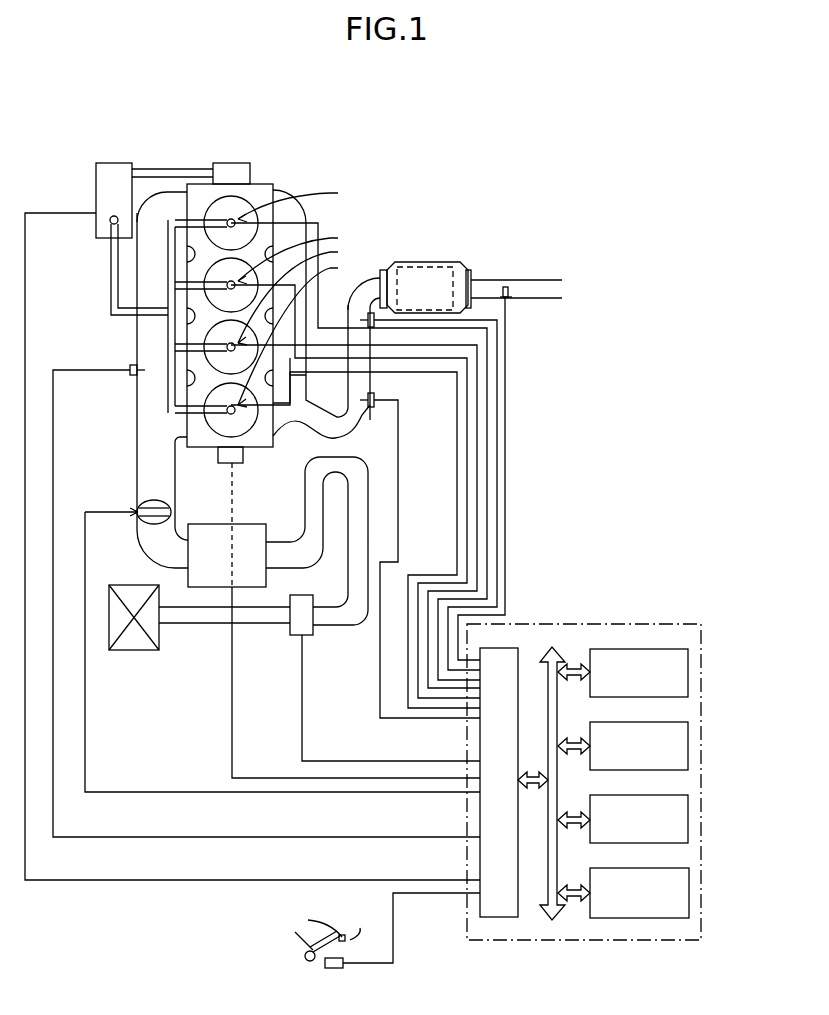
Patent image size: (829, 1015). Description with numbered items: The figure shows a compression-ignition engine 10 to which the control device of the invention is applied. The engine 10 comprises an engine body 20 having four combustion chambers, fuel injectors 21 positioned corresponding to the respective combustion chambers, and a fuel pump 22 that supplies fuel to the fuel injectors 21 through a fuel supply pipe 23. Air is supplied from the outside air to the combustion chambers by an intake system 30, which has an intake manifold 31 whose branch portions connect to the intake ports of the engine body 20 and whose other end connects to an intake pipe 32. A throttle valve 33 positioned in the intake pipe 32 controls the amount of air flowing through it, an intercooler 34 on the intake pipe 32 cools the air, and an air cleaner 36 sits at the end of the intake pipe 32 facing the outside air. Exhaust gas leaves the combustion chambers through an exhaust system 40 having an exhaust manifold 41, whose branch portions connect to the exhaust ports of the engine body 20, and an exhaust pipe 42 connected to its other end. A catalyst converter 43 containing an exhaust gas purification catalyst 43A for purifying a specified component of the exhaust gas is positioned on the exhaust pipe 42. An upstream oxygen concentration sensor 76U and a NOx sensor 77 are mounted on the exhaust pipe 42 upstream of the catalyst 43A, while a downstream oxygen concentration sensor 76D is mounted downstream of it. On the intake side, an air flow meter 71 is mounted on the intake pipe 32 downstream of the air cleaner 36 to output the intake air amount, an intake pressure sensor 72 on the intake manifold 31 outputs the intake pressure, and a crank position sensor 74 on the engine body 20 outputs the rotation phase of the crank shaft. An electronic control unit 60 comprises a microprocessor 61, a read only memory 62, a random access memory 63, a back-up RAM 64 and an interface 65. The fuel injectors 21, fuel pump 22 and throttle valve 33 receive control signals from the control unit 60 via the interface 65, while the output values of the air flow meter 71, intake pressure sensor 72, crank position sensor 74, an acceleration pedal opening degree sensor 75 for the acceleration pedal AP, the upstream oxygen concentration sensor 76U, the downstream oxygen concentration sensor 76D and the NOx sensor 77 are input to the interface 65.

The engine 10 is at (283, 122).
The engine body 20 is at (270, 182).
The fuel injectors 21 is at (338, 268).
The fuel pump 22 is at (95, 205).
The fuel supply pipe 23 is at (110, 300).
The intake system 30 is at (136, 332).
The intake manifold 31 is at (143, 385).
The intake pipe 32 is at (290, 568).
The throttle valve 33 is at (152, 525).
The intercooler 34 is at (188, 575).
The air cleaner 36 is at (133, 650).
The exhaust system 40 is at (401, 226).
The exhaust manifold 41 is at (300, 383).
The exhaust pipe 42 is at (504, 282).
The catalyst converter 43 is at (412, 262).
The exhaust gas purification catalyst 43A is at (453, 268).
The electronic control unit 60 is at (603, 789).
The microprocessor (CPU) 61 is at (688, 672).
The read only memory (ROM) 62 is at (688, 746).
The random access memory (RAM) 63 is at (688, 820).
The back-up RAM 64 is at (689, 893).
The interface 65 is at (517, 903).
The air flow meter 71 is at (290, 635).
The intake pressure sensor 72 is at (129, 368).
The crank position sensor 74 is at (243, 455).
The acceleration pedal opening degree sensor 75 is at (338, 968).
The downstream oxygen concentration sensor 76D is at (512, 298).
The upstream oxygen concentration sensor 76U is at (375, 323).
The NOx sensor 77 is at (375, 403).